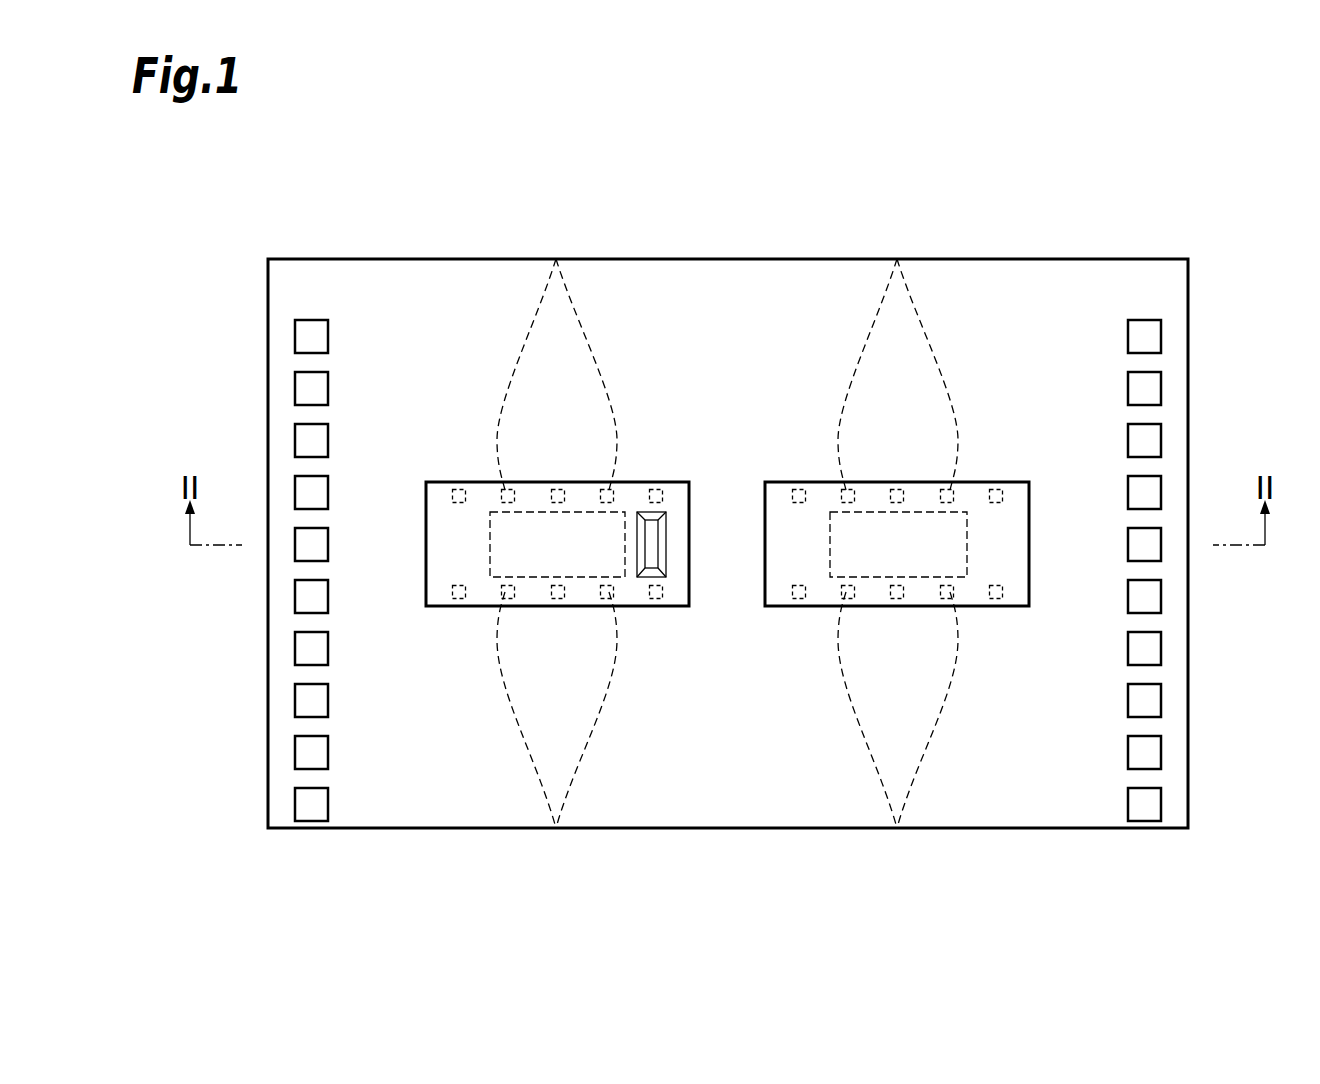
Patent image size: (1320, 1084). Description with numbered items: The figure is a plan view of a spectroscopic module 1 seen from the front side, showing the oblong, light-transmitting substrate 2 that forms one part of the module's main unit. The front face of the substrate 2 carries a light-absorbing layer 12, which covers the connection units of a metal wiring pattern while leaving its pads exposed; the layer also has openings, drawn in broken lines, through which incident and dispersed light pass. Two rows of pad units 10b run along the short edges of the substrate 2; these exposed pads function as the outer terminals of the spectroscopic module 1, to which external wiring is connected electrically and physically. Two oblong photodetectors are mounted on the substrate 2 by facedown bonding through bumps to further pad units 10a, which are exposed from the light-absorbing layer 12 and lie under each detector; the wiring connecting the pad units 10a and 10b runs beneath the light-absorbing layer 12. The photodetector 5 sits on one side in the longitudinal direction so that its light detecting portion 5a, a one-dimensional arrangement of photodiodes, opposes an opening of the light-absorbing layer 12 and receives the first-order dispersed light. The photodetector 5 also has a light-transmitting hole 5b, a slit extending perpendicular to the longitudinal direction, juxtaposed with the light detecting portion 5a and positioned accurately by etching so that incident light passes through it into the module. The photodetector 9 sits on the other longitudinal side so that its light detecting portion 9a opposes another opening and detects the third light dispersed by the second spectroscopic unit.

The spectroscopic module 1 is at (1142, 203).
The substrate 2 is at (1188, 286).
The photodetector 5 is at (438, 590).
The light detecting portion 5a is at (506, 545).
The light-transmitting hole 5b is at (658, 545).
The photodetector 9 is at (1013, 590).
The light detecting portion 9a is at (948, 545).
The pad units 10a is at (556, 259).
The pad units 10b is at (307, 492).
The light-absorbing layer 12 is at (736, 308).